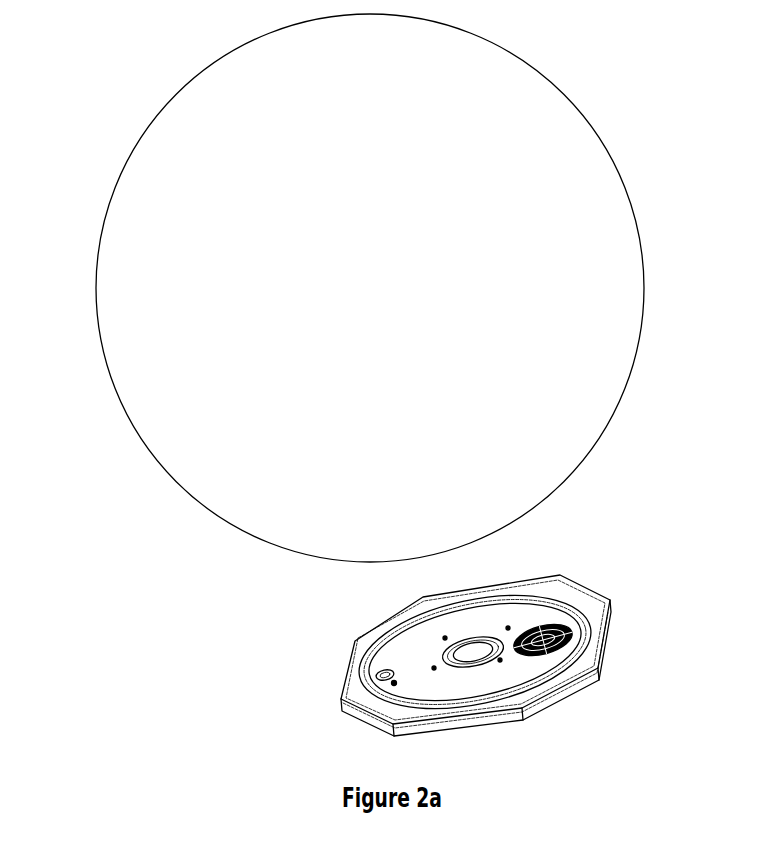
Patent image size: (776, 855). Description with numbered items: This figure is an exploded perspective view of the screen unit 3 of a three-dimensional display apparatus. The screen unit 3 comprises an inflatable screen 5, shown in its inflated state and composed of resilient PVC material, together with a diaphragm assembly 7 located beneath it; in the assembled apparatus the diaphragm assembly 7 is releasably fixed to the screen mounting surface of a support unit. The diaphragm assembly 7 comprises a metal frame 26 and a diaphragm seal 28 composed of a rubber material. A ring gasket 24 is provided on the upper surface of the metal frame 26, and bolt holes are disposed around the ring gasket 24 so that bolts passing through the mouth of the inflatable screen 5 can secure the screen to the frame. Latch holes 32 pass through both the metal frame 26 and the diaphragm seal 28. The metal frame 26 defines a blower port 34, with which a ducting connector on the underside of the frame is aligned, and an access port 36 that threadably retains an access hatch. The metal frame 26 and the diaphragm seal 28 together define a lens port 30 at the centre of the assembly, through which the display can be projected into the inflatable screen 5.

The screen unit 3 is at (113, 123).
The inflatable screen 5 is at (625, 390).
The diaphragm assembly 7 is at (630, 675).
The ring gasket 24 is at (366, 656).
The metal frame 26 is at (346, 694).
The diaphragm seal 28 is at (498, 647).
The lens port 30 is at (475, 647).
The latch holes 32 is at (445, 638).
The blower port 34 is at (380, 682).
The access port 36 is at (565, 631).